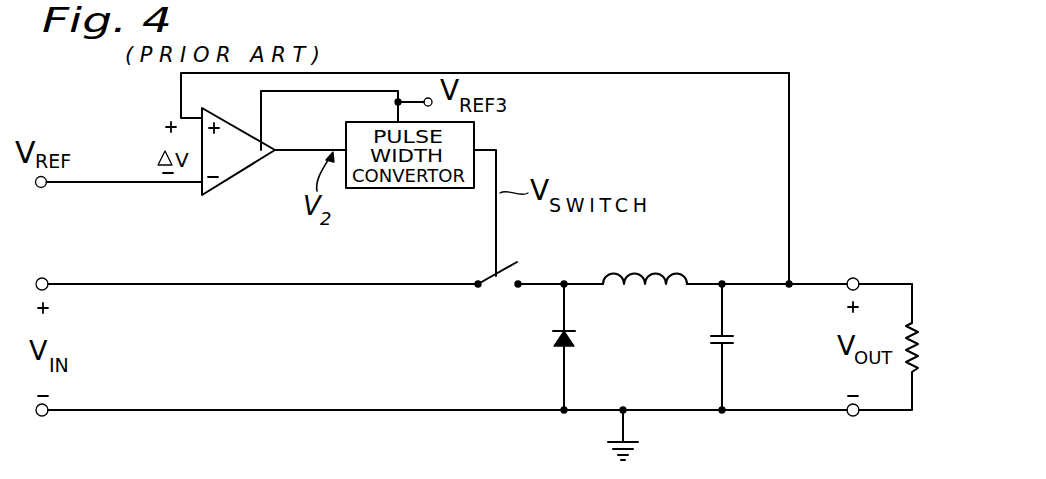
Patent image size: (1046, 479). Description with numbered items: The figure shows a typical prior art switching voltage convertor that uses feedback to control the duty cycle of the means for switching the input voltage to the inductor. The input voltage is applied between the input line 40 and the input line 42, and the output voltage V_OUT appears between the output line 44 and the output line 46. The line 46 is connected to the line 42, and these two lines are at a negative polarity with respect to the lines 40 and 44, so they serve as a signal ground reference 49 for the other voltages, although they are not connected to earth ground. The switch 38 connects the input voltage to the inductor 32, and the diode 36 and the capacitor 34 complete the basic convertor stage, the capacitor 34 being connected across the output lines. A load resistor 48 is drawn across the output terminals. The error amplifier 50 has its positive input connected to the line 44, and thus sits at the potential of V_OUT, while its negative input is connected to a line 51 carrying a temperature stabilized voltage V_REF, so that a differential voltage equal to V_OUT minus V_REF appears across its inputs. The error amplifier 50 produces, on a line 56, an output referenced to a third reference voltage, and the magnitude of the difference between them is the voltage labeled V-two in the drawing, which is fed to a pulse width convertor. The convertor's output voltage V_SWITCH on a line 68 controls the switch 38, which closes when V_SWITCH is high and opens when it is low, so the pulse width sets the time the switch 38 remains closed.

The inductor 32 is at (658, 274).
The capacitor 34 is at (711, 340).
The diode 36 is at (549, 335).
The switch 38 is at (499, 273).
The input line 40 is at (210, 286).
The input line 42 is at (246, 408).
The output line 44 is at (816, 283).
The output line 46 is at (775, 412).
The load resistor 48 is at (914, 320).
The signal ground reference 49 is at (628, 420).
The error amplifier 50 is at (241, 176).
The line 51 is at (106, 184).
The line 56 is at (317, 148).
The line 68 is at (491, 147).